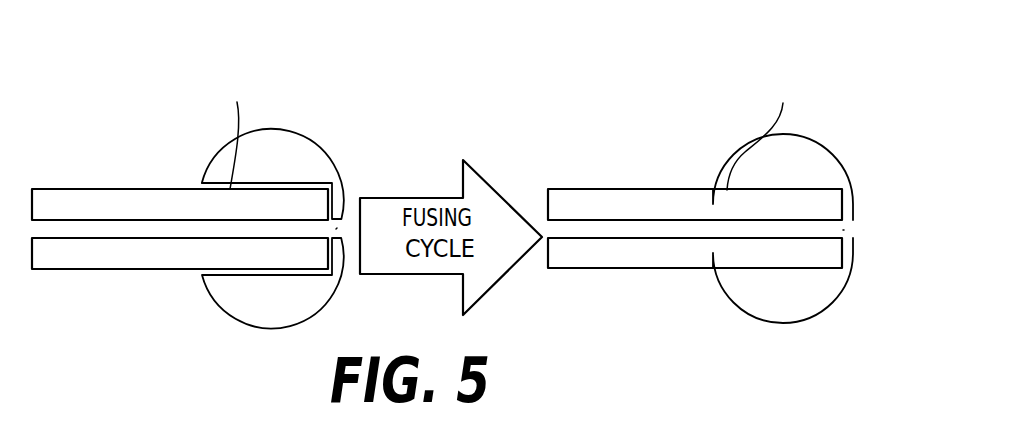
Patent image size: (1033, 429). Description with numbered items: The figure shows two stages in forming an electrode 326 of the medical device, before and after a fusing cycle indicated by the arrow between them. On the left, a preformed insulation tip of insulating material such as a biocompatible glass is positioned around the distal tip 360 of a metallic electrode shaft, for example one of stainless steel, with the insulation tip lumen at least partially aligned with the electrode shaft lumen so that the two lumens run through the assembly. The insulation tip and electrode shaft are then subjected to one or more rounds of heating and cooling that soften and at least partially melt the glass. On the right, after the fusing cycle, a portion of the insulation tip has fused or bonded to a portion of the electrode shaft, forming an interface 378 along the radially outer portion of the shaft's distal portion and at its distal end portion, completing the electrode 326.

The electrode 326 is at (716, 86).
The distal tip 360 is at (228, 132).
The interface 378 is at (762, 133).